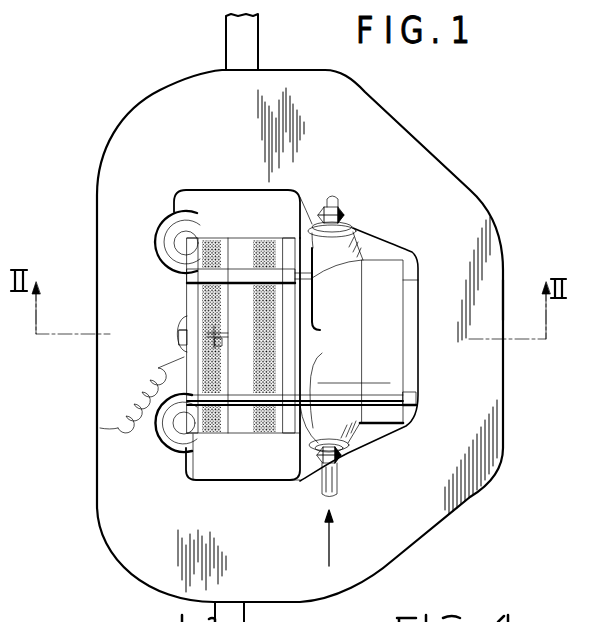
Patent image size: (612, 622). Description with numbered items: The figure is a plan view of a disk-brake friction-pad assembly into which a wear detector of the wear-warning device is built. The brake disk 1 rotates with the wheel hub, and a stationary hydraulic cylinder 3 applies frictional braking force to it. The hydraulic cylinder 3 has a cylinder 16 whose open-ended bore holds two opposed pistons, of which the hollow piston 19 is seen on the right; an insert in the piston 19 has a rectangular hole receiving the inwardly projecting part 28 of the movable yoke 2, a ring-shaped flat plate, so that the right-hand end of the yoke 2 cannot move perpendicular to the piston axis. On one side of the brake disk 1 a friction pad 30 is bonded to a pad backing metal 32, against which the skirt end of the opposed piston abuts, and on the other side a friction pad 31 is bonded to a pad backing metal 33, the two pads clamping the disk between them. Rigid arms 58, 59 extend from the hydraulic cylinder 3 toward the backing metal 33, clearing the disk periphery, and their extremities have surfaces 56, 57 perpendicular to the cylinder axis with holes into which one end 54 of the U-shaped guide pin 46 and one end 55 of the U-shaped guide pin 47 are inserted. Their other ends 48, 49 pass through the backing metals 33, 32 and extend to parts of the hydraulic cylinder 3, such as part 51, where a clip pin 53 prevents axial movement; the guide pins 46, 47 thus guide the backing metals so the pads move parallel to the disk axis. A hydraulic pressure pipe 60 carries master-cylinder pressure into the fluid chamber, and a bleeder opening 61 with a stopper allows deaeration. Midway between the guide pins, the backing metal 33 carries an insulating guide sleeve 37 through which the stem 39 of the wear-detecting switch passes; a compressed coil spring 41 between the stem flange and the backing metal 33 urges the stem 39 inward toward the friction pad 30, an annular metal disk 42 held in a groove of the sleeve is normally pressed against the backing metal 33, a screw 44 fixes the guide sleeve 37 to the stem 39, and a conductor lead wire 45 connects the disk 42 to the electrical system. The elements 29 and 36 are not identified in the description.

The brake disk 1 is at (261, 36).
The movable yoke 2 is at (378, 107).
The hydraulic cylinder 3 is at (381, 253).
The cylinder 16 is at (397, 274).
The piston 19 is at (406, 365).
The inwardly projecting part 28 is at (427, 316).
The housing side wall 29 is at (499, 295).
The friction pad 30 is at (276, 240).
The friction pad 31 is at (213, 238).
The pad backing metal 32 is at (279, 426).
The pad backing metal 33 is at (194, 480).
The spring 36 is at (98, 377).
The guide sleeve 37 is at (177, 322).
The stem 39 is at (218, 338).
The compressed coil spring 41 is at (212, 358).
The annular metal disk 42 is at (186, 316).
The screw 44 is at (178, 340).
The conductor lead wire 45 is at (100, 428).
The guide pin 46 is at (158, 250).
The guide pin 47 is at (153, 427).
The other end of guide pin 48 is at (258, 275).
The other end of guide pin 49 is at (258, 402).
The part of hydraulic cylinder 51 is at (306, 481).
The clip pin 53 is at (330, 390).
The one end of guide pin 54 is at (168, 220).
The one end of guide pin 55 is at (174, 460).
The surface 56 is at (166, 231).
The surface 57 is at (164, 445).
The rigid arm 58 is at (205, 204).
The rigid arm 59 is at (221, 470).
The hydraulic pressure pipe 60 is at (339, 487).
The bleeder opening 61 is at (340, 214).